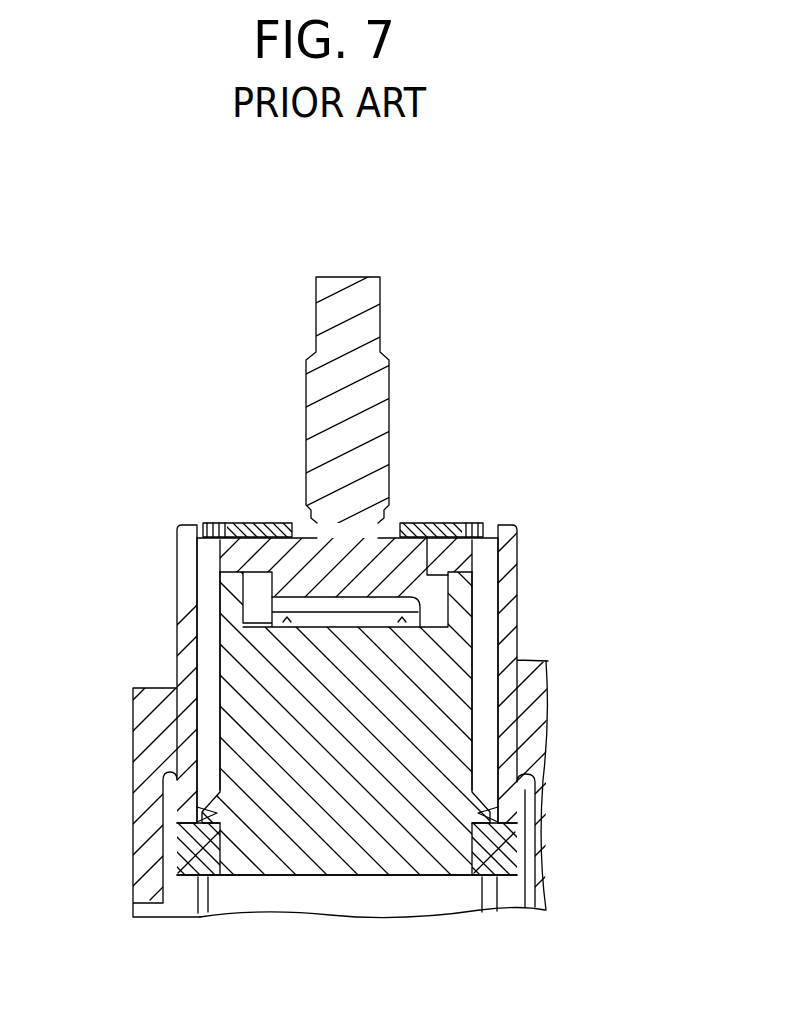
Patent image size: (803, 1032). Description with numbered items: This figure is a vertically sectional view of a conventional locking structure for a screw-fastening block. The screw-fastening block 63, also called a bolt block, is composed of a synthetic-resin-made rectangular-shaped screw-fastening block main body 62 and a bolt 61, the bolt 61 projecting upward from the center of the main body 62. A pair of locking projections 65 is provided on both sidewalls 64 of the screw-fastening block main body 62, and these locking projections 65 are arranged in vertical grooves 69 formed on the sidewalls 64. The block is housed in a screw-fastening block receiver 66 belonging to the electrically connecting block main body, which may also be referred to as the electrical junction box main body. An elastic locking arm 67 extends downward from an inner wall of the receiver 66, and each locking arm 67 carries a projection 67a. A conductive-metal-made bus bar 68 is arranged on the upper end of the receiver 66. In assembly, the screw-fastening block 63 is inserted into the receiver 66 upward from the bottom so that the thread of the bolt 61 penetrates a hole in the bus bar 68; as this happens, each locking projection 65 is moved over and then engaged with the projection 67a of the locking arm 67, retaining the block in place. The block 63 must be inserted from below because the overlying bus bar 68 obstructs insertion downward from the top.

The bolt 61 is at (390, 442).
The screw-fastening block main body 62 is at (440, 665).
The screw-fastening block 63 is at (350, 893).
The sidewalls 64 is at (222, 717).
The locking projections 65 is at (217, 813).
The screw-fastening block receiver 66 is at (536, 554).
The elastic locking arm 67 is at (185, 835).
The projection of the locking arm 67a is at (475, 877).
The bus bar 68 is at (432, 522).
The vertical grooves 69 is at (480, 680).